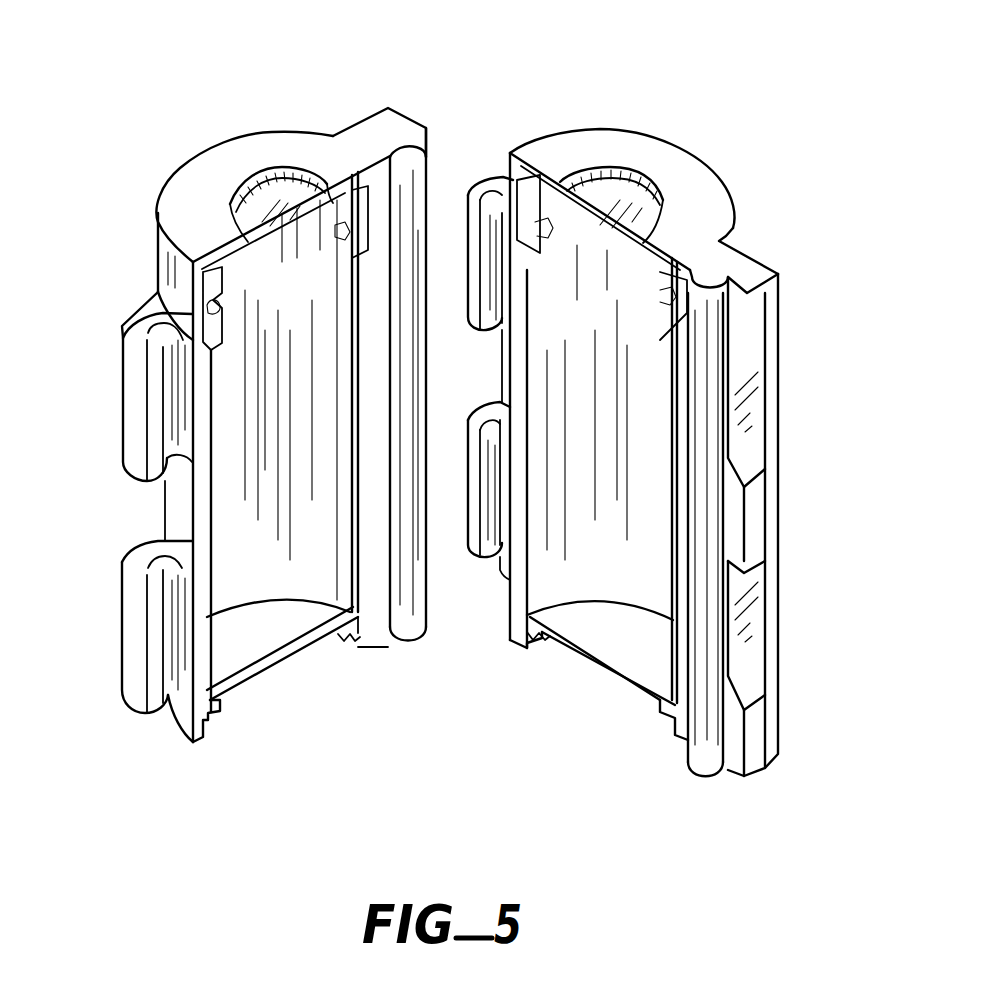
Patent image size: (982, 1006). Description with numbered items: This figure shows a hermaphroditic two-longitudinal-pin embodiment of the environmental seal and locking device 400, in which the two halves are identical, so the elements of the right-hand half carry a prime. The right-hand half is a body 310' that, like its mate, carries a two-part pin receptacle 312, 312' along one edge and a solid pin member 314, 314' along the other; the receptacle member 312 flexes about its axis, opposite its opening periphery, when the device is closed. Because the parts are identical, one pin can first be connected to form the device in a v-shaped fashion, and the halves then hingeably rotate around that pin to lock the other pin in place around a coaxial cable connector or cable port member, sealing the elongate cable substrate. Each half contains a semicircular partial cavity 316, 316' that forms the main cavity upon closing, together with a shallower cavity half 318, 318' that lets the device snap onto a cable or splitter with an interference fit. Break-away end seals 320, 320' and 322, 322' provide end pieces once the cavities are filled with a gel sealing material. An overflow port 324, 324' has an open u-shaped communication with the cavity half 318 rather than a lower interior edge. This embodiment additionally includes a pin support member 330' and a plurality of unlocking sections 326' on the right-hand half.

The body 310' is at (686, 434).
The two-part pin receptacle 312 is at (109, 506).
The pin receptacle member 312' is at (431, 291).
The pin member 314 is at (308, 333).
The pin member 314' is at (775, 571).
The semicircular partial cavity 316 is at (158, 591).
The semicircular partial cavity 316' is at (743, 400).
The cavity half 318 is at (173, 381).
The cavity half 318' is at (550, 131).
The break-away end seal 320 is at (180, 197).
The break-away end seal 320' is at (637, 134).
The break-away end seal 322 is at (270, 726).
The break-away end seal 322' is at (610, 726).
The overflow port 324 is at (197, 268).
The overflow port 324' is at (764, 306).
The unlocking sections 326' is at (796, 525).
The pin support member 330' is at (804, 537).
The environmental seal and locking device 400 is at (456, 752).